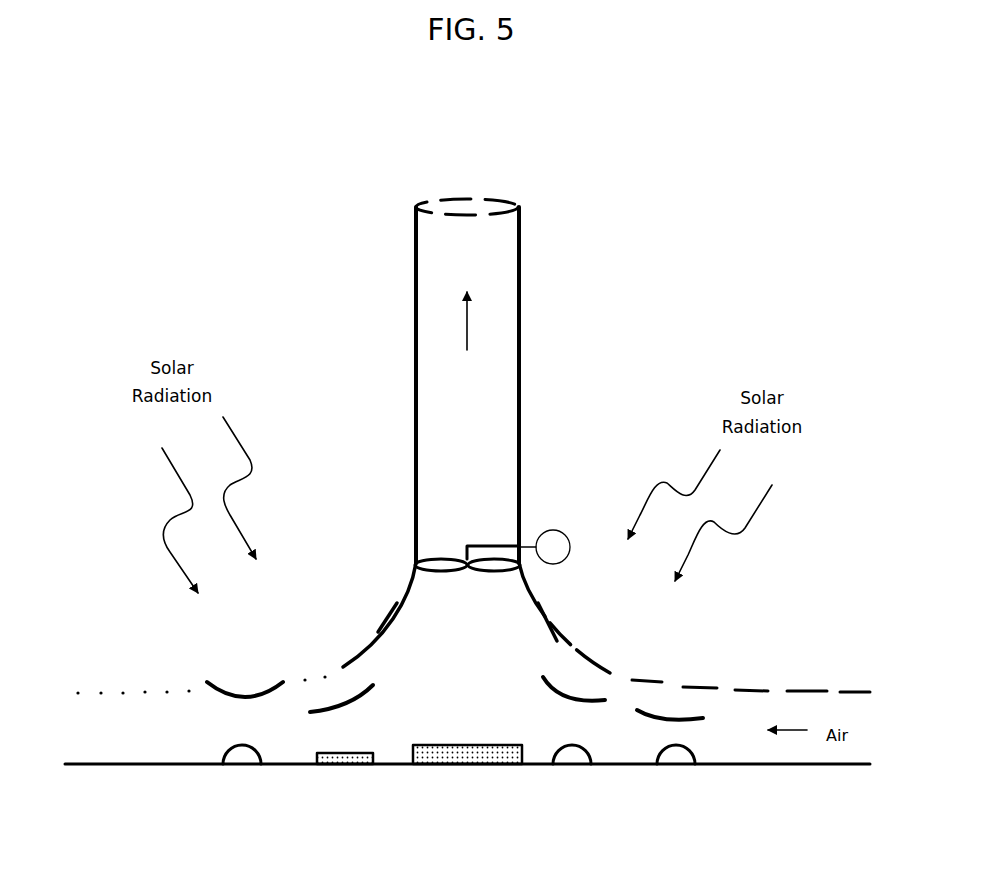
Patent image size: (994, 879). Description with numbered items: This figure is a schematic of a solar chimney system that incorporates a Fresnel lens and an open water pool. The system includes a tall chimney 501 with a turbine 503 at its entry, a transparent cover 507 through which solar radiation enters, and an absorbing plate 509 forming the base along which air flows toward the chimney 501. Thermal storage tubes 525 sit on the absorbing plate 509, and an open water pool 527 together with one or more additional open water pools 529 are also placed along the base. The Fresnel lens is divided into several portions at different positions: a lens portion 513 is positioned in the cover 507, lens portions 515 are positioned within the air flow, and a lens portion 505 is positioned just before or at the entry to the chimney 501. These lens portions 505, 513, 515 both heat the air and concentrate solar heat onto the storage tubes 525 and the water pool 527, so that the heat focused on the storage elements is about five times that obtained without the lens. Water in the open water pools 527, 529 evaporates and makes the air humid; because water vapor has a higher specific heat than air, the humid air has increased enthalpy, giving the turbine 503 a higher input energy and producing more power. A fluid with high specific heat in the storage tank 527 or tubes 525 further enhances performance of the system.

The chimney 501 is at (526, 332).
The turbine 503 is at (434, 558).
The lens portion 505 is at (386, 626).
The transparent cover 507 is at (152, 690).
The absorbing plate 509 is at (762, 765).
The lens portion 513 is at (252, 690).
The lens portions 515 is at (342, 700).
The storage tubes 525 is at (241, 766).
The open water pool 527 is at (457, 766).
The additional open water pool 529 is at (345, 766).